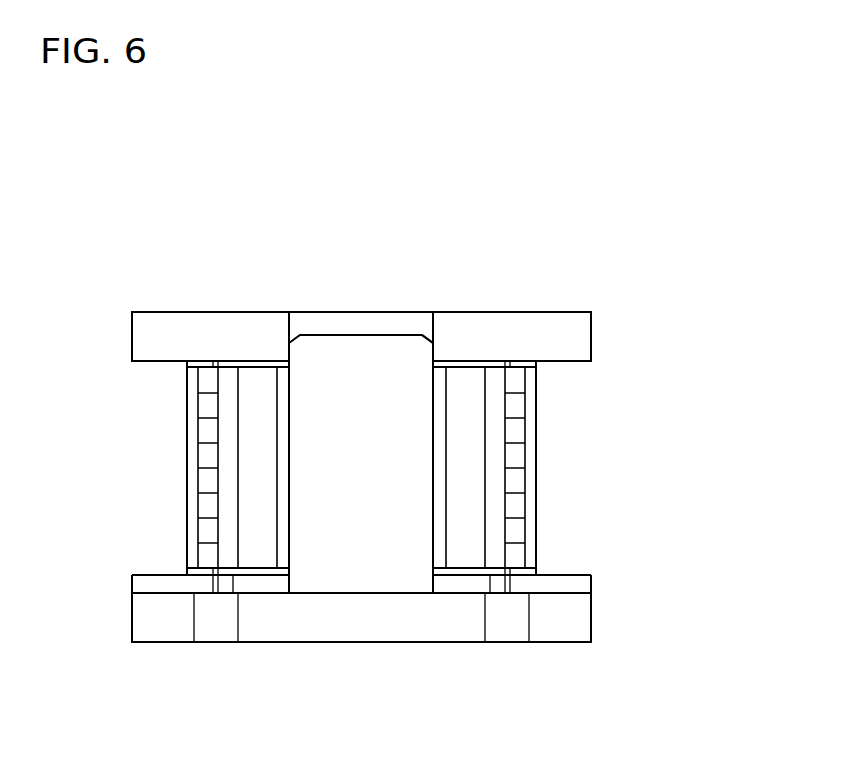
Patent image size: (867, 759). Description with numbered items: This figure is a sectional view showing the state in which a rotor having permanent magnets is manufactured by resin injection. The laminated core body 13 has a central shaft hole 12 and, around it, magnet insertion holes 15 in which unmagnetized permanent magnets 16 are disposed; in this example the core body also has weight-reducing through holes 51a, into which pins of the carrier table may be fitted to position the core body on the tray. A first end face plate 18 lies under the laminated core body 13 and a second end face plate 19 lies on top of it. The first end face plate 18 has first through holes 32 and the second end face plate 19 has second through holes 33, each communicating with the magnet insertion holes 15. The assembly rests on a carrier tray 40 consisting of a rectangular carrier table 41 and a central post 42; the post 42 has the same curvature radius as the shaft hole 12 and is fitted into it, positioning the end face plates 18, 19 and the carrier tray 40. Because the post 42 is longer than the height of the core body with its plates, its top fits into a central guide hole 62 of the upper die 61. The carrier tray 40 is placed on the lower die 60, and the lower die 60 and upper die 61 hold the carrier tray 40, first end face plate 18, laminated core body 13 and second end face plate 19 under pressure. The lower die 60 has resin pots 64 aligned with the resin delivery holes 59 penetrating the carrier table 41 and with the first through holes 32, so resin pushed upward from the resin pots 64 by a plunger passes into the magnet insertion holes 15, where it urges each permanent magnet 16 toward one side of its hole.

The shaft hole 12 is at (290, 390).
The laminated core body 13 is at (540, 462).
The magnet insertion holes 15 is at (519, 436).
The permanent magnets 16 is at (515, 530).
The first end face plate 18 is at (190, 572).
The second end face plate 19 is at (186, 364).
The first through holes 32 is at (220, 575).
The second through holes 33 is at (214, 366).
The carrier tray 40 is at (567, 565).
The carrier table 41 is at (577, 584).
The post 42 is at (382, 360).
The weight-reducing through holes 51a is at (262, 552).
The resin delivery holes 59 is at (500, 587).
The lower die 60 is at (591, 615).
The upper die 61 is at (592, 335).
The central guide hole 62 is at (428, 333).
The resin pots 64 is at (508, 627).